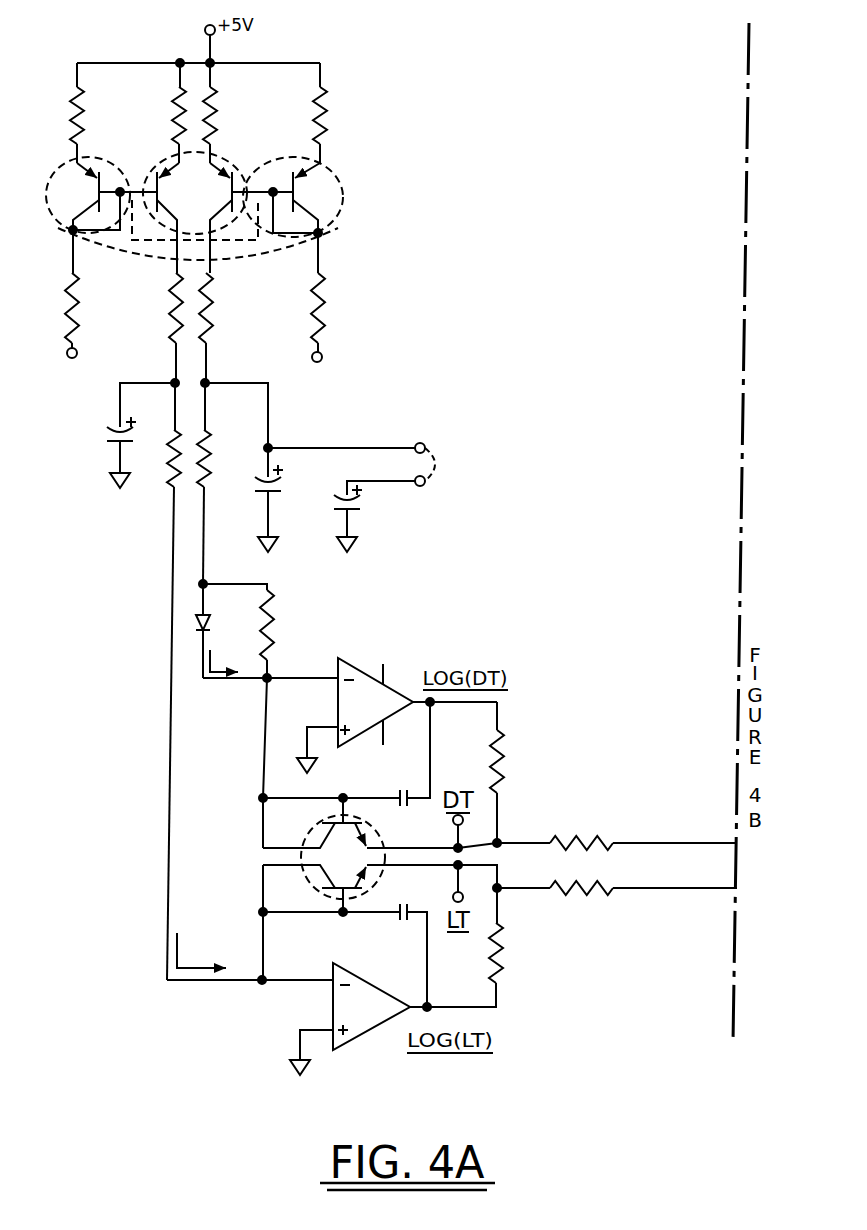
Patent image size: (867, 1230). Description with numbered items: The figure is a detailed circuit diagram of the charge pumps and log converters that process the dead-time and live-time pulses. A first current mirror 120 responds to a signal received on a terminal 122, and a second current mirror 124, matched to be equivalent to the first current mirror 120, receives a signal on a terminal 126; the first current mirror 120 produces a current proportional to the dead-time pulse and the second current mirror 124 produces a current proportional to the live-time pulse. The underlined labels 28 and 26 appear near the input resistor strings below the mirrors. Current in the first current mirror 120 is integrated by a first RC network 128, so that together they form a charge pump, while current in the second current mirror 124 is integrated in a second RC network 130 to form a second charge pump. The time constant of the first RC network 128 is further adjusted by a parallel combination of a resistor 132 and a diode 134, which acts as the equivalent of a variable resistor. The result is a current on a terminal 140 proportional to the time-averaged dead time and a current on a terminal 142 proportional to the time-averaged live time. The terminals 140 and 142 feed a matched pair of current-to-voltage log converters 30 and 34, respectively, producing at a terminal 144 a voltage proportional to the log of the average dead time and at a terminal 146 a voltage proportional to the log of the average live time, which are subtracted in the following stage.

The second current mirror 124 is at (115, 136).
The first current mirror 120 is at (245, 136).
The resistor network 28 is at (135, 291).
The resistor network 26 is at (269, 291).
The terminal 126 is at (77, 349).
The terminal 122 is at (312, 355).
The second RC network 130 is at (141, 435).
The first RC network 128 is at (320, 467).
The resistor 132 is at (273, 611).
The diode 134 is at (211, 612).
The terminal 140 is at (298, 678).
The terminal 142 is at (167, 906).
The current-to-voltage log converter 30 is at (363, 780).
The current-to-voltage log converter 34 is at (358, 949).
The terminal 144 is at (528, 843).
The terminal 146 is at (525, 888).